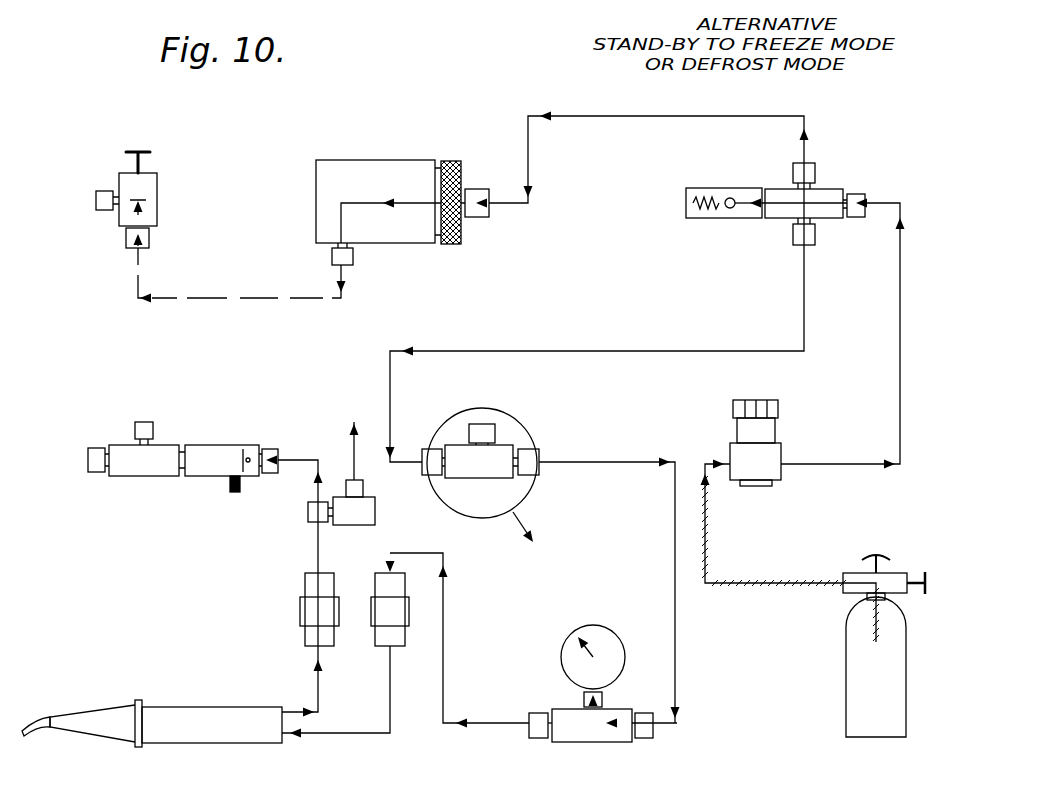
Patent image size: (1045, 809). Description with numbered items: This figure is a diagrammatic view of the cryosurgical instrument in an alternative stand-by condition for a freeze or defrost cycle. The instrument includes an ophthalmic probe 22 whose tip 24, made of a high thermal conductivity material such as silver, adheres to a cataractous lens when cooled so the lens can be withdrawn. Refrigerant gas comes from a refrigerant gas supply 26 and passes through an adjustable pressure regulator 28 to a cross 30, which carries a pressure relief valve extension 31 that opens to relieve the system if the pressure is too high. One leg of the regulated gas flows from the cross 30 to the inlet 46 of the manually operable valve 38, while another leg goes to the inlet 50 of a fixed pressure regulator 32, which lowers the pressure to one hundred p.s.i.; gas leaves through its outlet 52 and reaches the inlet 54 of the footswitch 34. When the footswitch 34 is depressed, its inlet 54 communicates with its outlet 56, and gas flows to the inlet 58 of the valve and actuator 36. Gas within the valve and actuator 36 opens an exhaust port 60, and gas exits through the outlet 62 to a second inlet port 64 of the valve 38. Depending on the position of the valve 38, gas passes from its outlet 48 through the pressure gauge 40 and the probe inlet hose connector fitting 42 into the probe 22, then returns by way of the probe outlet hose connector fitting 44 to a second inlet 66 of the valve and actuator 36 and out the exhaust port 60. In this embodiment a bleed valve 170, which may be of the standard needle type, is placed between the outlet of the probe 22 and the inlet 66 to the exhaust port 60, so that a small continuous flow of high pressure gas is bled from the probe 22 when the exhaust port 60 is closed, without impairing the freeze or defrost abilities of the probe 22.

The ophthalmic probe 22 is at (220, 707).
The tip 24 is at (30, 722).
The refrigerant gas supply 26 is at (846, 663).
The adjustable pressure regulator 28 is at (762, 430).
The cross 30 is at (838, 218).
The pressure relief valve extension 31 is at (720, 218).
The fixed pressure regulator 32 is at (430, 243).
The footswitch 34 is at (157, 183).
The valve and actuator 36 is at (200, 465).
The manually operable valve 38 is at (513, 427).
The pressure gauge 40 is at (613, 640).
The probe inlet hose connector fitting 42 is at (402, 640).
The probe outlet hose connector fitting 44 is at (300, 612).
The inlet 46 is at (424, 450).
The outlet 48 is at (540, 453).
The inlet 50 is at (478, 189).
The outlet 52 is at (353, 258).
The inlet 54 is at (149, 238).
The outlet 56 is at (104, 204).
The inlet 58 is at (93, 447).
The exhaust port 60 is at (235, 492).
The outlet 62 is at (146, 422).
The second inlet port 64 is at (480, 424).
The second inlet 66 is at (270, 449).
The bleed valve 170 is at (375, 516).